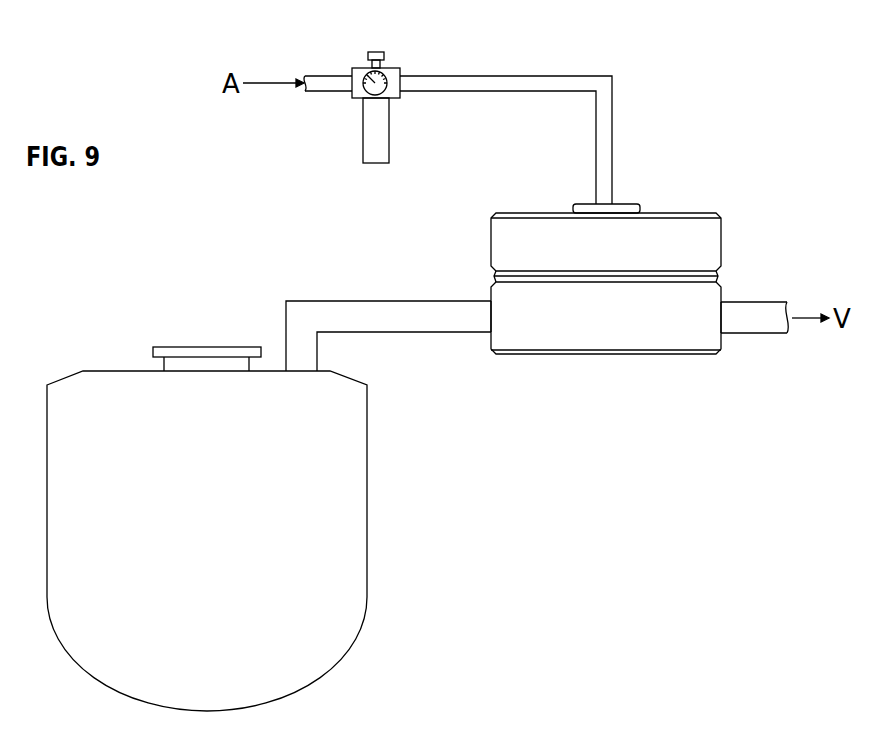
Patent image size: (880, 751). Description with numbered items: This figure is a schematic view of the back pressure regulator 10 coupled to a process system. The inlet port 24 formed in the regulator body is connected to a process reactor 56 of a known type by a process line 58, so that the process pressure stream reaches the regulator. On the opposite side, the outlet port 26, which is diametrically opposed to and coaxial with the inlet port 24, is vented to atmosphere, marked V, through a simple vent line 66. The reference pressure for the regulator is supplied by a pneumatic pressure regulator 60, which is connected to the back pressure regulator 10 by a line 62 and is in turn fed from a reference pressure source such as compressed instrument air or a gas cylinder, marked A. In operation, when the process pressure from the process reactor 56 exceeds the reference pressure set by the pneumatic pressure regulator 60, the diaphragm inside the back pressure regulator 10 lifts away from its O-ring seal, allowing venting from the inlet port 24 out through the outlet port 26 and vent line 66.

The back pressure regulator 10 is at (699, 197).
The inlet port 24 is at (490, 315).
The outlet port 26 is at (720, 318).
The process reactor 56 is at (193, 543).
The process line 58 is at (366, 308).
The pneumatic pressure regulator 60 is at (379, 127).
The line 62 is at (607, 135).
The vent line 66 is at (758, 308).